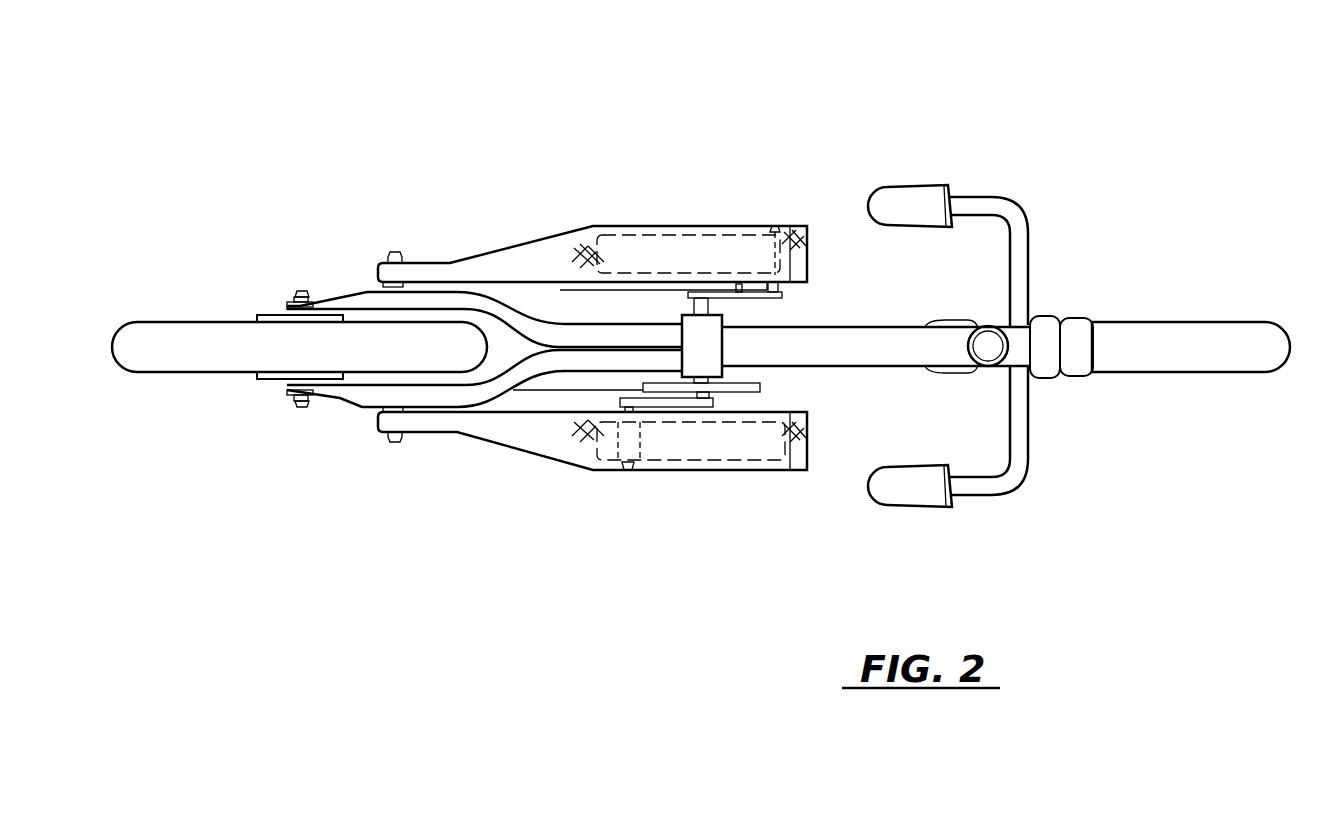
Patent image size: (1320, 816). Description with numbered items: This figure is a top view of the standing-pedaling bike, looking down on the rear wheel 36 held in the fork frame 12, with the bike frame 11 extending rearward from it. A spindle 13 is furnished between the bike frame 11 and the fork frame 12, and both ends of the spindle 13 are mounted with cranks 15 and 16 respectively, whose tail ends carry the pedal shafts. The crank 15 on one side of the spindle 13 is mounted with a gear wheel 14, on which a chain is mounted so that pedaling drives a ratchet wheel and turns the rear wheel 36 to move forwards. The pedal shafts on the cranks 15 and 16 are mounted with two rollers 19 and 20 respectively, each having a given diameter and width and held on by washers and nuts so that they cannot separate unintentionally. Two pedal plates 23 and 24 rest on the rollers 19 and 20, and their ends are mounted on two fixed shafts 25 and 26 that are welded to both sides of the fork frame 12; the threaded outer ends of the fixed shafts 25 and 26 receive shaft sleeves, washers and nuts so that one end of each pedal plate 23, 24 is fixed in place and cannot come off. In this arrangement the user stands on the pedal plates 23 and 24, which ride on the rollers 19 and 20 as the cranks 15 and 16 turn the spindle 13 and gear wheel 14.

The bike frame 11 is at (905, 150).
The fork frame 12 is at (470, 305).
The spindle 13 is at (705, 300).
The gear wheel 14 is at (760, 386).
The crank 15 is at (668, 407).
The crank 16 is at (738, 290).
The roller 19 is at (628, 462).
The roller 20 is at (758, 224).
The pedal plate 23 is at (748, 445).
The pedal plate 24 is at (655, 250).
The fixed shaft 25 is at (393, 442).
The fixed shaft 26 is at (396, 252).
The rear wheel 36 is at (270, 340).